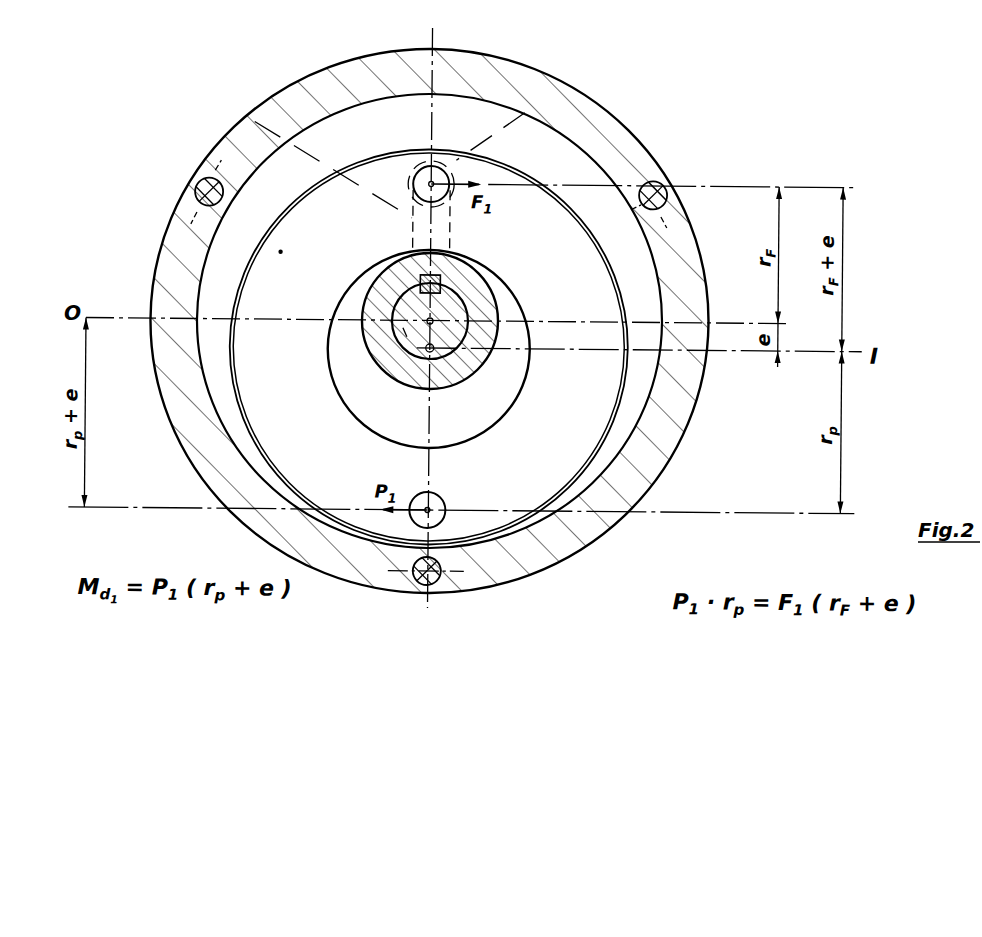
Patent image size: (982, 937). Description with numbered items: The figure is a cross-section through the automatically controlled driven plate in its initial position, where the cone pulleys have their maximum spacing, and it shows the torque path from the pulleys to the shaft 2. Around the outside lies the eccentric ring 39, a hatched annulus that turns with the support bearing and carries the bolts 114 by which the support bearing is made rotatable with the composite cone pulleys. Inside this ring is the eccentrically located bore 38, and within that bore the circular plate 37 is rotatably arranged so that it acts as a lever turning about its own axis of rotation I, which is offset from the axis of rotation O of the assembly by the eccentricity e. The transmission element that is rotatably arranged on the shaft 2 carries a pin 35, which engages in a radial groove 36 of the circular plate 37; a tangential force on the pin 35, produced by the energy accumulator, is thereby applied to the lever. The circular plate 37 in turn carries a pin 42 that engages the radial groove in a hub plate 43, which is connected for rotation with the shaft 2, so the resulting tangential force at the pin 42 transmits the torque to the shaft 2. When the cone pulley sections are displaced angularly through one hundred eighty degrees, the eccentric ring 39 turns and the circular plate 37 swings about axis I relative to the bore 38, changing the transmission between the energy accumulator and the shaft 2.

The shaft 2 is at (448, 307).
The pin 35 is at (523, 112).
The radial groove 36 is at (253, 123).
The circular plate 37 is at (280, 253).
The eccentrically located bore 38 is at (373, 157).
The eccentric ring 39 is at (565, 157).
The pin 42 is at (432, 517).
The hub plate 43 is at (378, 305).
The bolts 114 is at (204, 185).